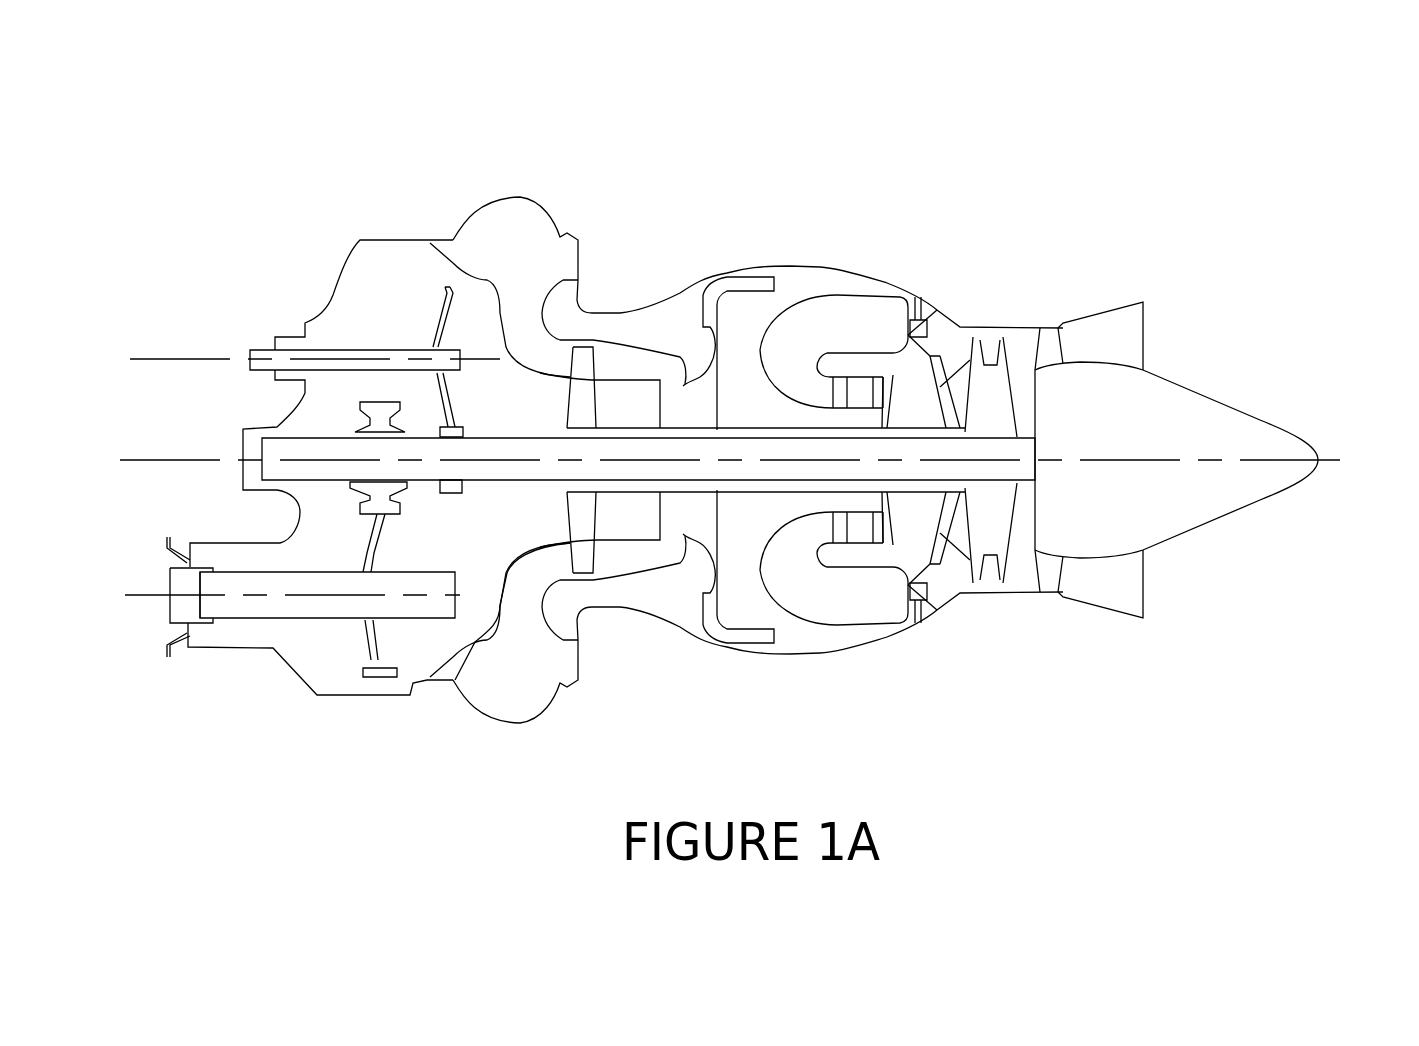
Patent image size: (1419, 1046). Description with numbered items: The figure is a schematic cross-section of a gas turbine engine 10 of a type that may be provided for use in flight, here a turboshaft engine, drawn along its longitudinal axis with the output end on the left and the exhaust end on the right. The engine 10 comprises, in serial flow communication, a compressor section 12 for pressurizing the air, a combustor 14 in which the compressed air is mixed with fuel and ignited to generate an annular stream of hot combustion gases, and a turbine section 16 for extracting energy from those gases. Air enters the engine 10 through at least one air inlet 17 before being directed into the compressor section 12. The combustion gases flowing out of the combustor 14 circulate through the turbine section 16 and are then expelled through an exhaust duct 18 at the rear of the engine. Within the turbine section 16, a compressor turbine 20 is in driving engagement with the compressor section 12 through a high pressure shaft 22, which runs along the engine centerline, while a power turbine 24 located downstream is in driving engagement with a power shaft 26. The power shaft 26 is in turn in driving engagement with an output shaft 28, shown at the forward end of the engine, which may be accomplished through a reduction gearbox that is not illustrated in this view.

The gas turbine engine 10 is at (1118, 204).
The compressor section 12 is at (685, 388).
The combustor 14 is at (840, 327).
The turbine section 16 is at (947, 540).
The air inlet 17 is at (510, 723).
The exhaust duct 18 is at (1025, 347).
The compressor turbine 20 is at (905, 520).
The high pressure shaft 22 is at (763, 427).
The power turbine 24 is at (987, 357).
The power shaft 26 is at (503, 480).
The output shaft 28 is at (236, 607).